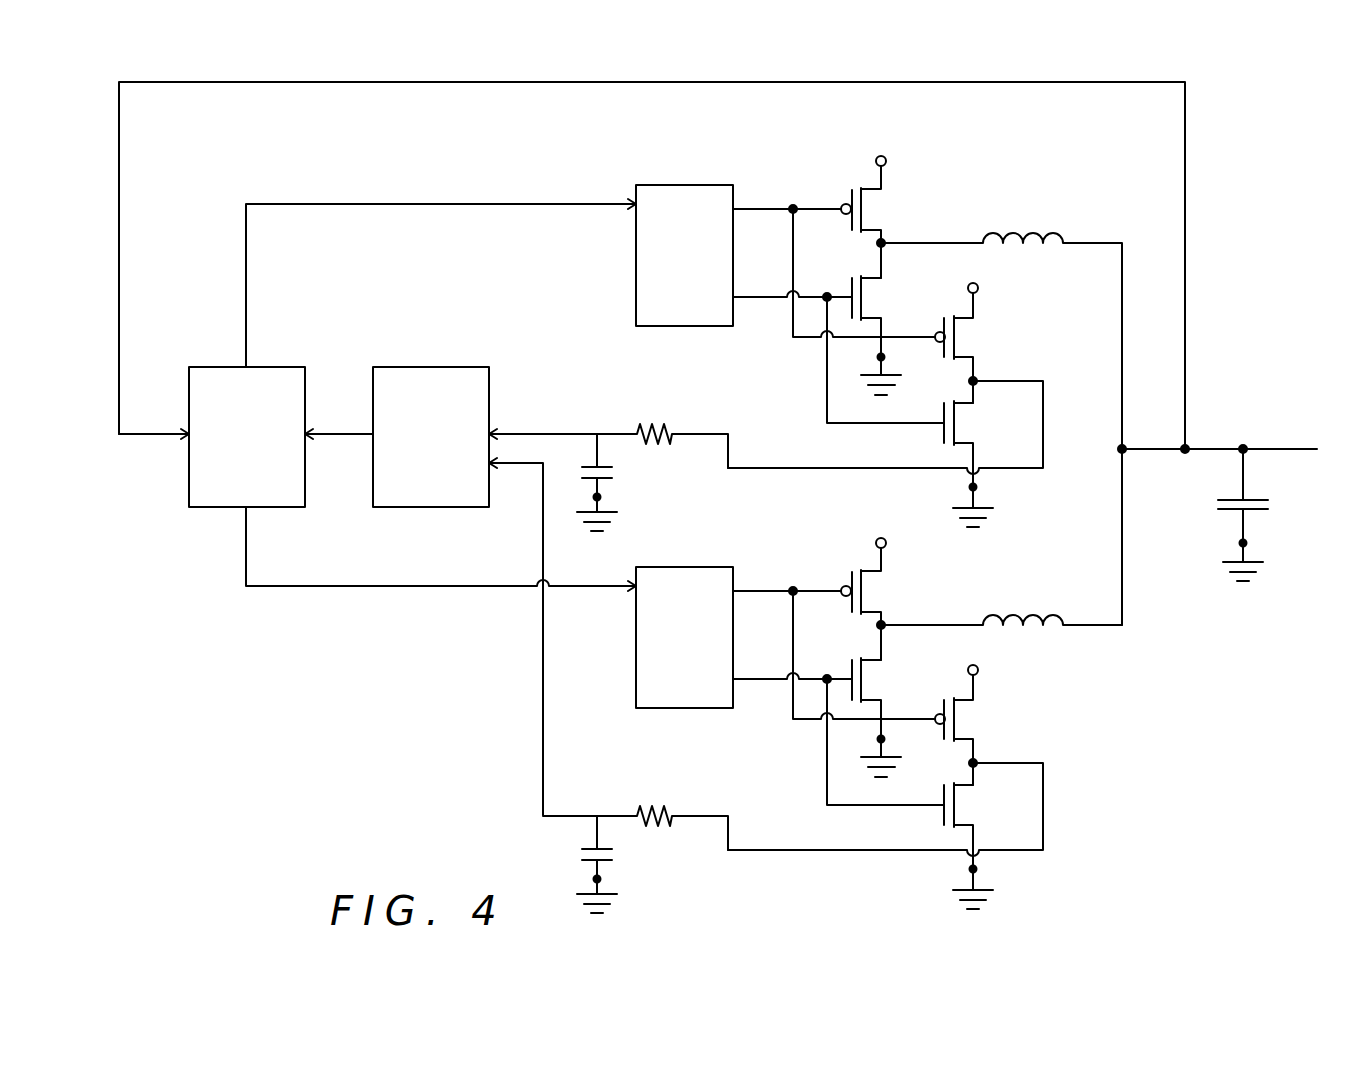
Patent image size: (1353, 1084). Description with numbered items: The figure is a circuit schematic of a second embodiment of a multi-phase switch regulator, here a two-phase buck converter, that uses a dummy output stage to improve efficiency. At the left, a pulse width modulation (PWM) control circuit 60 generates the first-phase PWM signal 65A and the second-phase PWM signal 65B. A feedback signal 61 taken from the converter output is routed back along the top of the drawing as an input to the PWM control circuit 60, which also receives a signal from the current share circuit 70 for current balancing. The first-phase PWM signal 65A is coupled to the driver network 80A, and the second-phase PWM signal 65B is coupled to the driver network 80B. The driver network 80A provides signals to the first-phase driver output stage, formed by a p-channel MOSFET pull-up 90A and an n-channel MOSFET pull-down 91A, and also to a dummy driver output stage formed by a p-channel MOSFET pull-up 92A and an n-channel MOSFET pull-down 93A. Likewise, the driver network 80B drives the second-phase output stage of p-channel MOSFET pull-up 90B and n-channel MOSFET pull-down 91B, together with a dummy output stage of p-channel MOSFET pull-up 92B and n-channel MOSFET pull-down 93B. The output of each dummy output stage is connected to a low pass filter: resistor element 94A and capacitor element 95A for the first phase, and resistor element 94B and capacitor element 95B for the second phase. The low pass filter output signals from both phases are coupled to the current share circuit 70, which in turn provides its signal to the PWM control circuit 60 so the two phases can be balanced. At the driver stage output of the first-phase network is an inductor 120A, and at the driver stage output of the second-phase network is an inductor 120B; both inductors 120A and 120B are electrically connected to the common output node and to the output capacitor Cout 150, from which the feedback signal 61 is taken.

The feedback signal 61 is at (398, 83).
The pulse width modulation (PWM) control circuit 60 is at (230, 365).
The current share circuit 70 is at (413, 365).
The Phase 1 PWM signal 65A is at (423, 206).
The Phase 2 PWM signal 65B is at (398, 588).
The driver network 80A is at (690, 185).
The driver network 80B is at (682, 626).
The p-channel MOSFET pull-up 90A is at (887, 212).
The p-channel MOSFET pull-up 90B is at (883, 587).
The n-channel MOSFET pull-down 91A is at (887, 302).
The n-channel MOSFET pull-down 91B is at (889, 712).
The dummy driver output stage p-channel MOSFET pull-up 92A is at (977, 342).
The dummy driver output stage p-channel MOSFET pull-up 92B is at (977, 714).
The dummy driver output stage n-channel MOSFET pull-down 93A is at (977, 428).
The dummy driver output stage n-channel MOSFET pull-down 93B is at (885, 836).
The inductor 120A is at (1018, 215).
The inductor 120B is at (1001, 597).
The resistor element 94A is at (652, 415).
The resistor element 94B is at (635, 810).
The capacitor element 95A is at (618, 480).
The capacitor element 95B is at (625, 864).
The output capacitor Cout 150 is at (1212, 502).